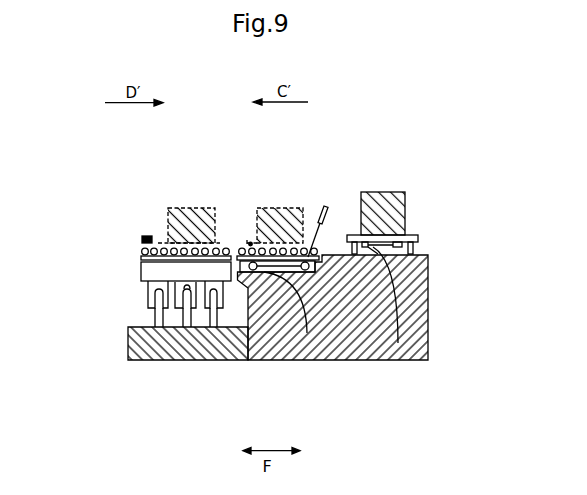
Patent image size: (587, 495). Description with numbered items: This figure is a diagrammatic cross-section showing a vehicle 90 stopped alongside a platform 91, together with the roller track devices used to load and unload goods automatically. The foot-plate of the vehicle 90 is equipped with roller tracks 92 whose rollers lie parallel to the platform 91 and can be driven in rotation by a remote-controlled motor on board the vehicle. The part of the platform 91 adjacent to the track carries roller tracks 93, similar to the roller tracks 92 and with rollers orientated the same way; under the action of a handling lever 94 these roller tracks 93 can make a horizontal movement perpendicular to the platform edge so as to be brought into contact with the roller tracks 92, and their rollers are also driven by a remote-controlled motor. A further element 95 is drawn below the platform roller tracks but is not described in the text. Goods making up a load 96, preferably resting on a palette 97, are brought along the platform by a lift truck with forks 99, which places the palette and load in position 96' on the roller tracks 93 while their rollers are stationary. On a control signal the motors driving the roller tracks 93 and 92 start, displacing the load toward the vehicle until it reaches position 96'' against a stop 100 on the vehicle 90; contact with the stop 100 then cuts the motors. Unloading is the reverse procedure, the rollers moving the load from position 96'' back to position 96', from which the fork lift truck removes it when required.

The vehicle 90 is at (171, 272).
The platform 91 is at (428, 308).
The roller tracks 92 is at (140, 253).
The roller tracks 93 is at (250, 244).
The handling lever 94 is at (326, 206).
The carriage with rollers 95 is at (307, 260).
The load 96 is at (383, 183).
The position of load on platform roller tracks 96' is at (275, 188).
The position of load in vehicle 96'' is at (189, 187).
The palette 97 is at (418, 236).
The forks 99 is at (398, 247).
The stop 100 is at (150, 236).